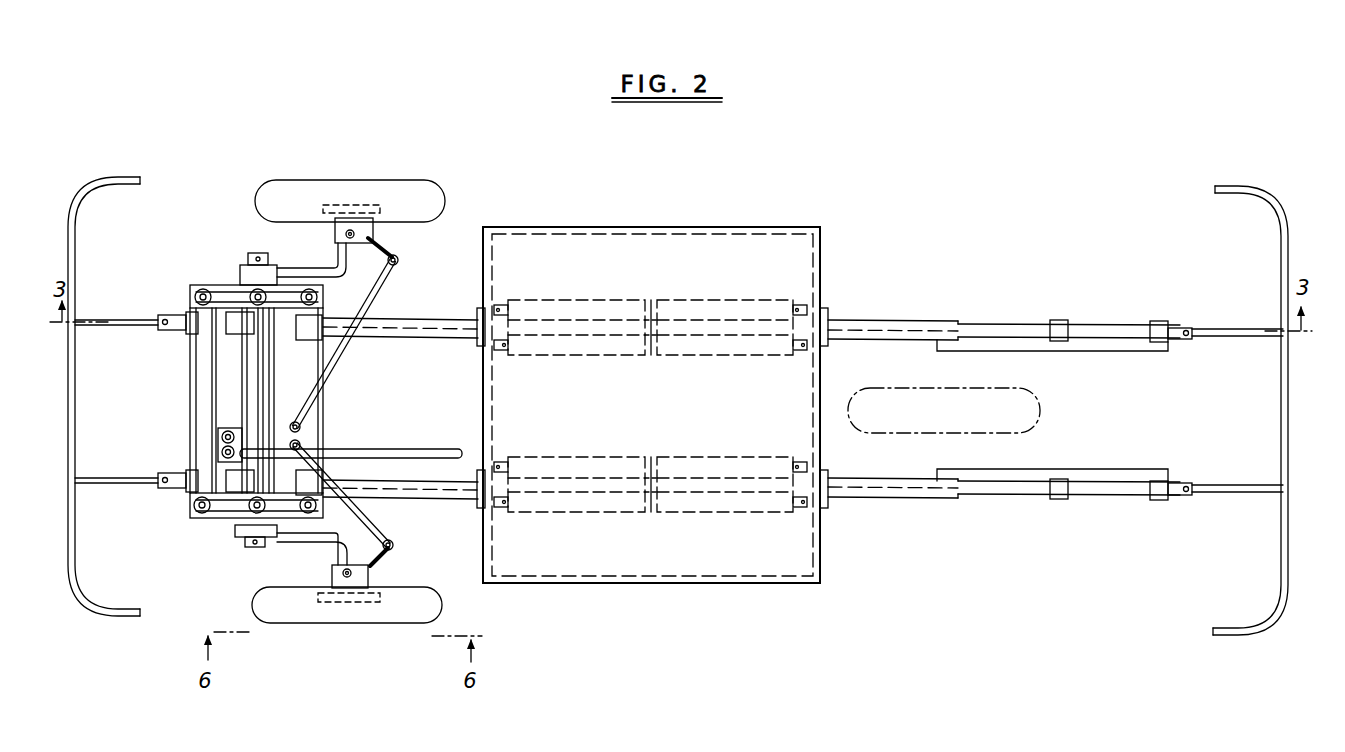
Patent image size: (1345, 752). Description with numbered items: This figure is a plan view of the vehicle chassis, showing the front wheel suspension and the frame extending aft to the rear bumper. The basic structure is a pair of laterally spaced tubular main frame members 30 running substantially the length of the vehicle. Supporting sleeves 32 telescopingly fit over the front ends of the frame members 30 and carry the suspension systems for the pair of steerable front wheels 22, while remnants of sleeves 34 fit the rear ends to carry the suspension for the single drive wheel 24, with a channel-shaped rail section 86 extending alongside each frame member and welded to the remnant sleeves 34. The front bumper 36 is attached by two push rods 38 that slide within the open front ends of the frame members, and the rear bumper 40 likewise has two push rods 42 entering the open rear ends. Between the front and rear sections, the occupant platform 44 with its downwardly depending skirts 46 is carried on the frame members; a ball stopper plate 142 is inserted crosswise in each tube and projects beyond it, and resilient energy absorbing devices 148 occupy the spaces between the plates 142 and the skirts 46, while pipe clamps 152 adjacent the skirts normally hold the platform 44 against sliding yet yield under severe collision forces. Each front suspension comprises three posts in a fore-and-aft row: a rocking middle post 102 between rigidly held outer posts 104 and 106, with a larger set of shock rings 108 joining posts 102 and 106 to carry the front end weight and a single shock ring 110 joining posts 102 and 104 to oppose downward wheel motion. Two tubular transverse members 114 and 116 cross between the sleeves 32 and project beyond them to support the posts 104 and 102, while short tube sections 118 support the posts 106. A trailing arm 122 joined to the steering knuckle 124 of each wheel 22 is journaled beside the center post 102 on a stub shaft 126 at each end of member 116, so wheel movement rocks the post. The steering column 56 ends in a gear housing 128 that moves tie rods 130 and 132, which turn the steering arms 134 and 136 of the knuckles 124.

The front steerable wheels 22 is at (432, 195).
The drive wheel 24 is at (948, 392).
The main frame members 30 is at (176, 315).
The supporting sleeves 32 is at (428, 318).
The remnants of sleeves 34 is at (910, 319).
The front bumper 36 is at (76, 414).
The push rods 38 is at (112, 326).
The rear bumper 40 is at (1280, 386).
The push rods 42 is at (1237, 328).
The platform 44 is at (642, 224).
The skirts 46 is at (730, 585).
The steering column 56 is at (446, 450).
The channel-shaped rail section 86 is at (1112, 350).
The middle posts 102 is at (232, 520).
The outer post 104 is at (203, 288).
The outer post 106 is at (335, 505).
The shock rings 108 is at (275, 535).
The shock ring 110 is at (220, 519).
The transverse member 114 is at (196, 387).
The transverse member 116 is at (270, 392).
The tube sections 118 is at (305, 336).
The trailing arm 122 is at (298, 267).
The steering knuckle 124 is at (366, 204).
The stub shaft 126 is at (258, 252).
The housing 128 is at (222, 432).
The tie rod 130 is at (330, 381).
The tie rod 132 is at (378, 530).
The steering arm 134 is at (400, 246).
The steering arm 136 is at (396, 560).
The ball stopper 142 is at (650, 300).
The energy absorbing devices 148 is at (720, 300).
The pipe clamps 152 is at (500, 306).